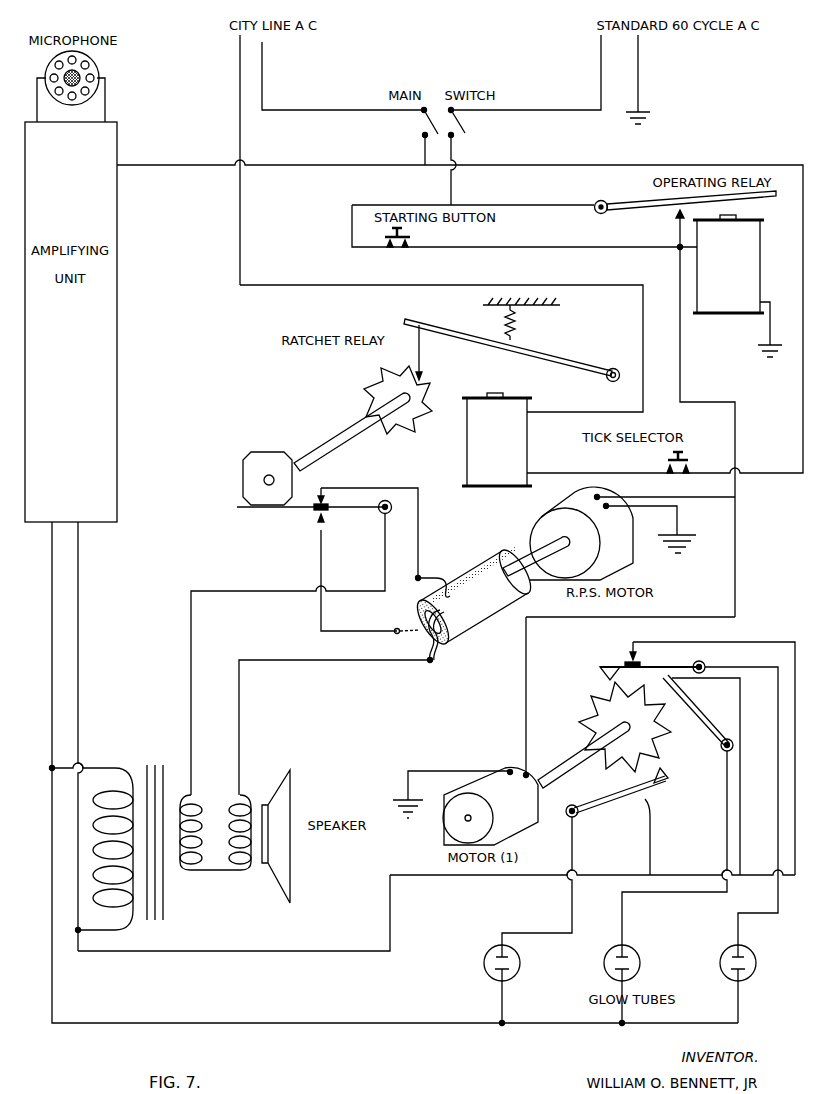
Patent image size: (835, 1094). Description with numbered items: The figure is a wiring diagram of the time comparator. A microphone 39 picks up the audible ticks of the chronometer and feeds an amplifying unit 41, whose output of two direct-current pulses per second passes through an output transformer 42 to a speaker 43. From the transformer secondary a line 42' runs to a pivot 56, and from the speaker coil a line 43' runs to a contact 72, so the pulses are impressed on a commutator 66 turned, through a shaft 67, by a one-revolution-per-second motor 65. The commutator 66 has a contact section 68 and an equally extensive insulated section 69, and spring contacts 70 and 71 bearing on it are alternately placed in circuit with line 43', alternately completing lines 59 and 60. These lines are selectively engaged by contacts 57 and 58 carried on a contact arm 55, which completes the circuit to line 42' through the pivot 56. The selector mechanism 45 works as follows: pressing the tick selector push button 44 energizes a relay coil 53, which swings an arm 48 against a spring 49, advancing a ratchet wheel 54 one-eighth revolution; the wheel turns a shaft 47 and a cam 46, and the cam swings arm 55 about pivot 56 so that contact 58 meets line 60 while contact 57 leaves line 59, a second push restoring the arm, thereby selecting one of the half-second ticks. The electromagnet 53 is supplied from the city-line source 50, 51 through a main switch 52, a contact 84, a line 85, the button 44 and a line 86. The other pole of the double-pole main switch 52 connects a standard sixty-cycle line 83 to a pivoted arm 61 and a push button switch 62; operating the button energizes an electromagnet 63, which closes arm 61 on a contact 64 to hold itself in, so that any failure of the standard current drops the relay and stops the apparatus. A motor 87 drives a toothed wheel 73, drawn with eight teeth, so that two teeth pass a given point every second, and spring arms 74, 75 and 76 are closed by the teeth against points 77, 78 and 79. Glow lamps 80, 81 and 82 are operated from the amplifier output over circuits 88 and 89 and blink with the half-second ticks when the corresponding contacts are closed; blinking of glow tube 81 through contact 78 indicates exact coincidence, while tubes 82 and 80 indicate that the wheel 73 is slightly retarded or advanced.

The microphone 39 is at (98, 70).
The amplifying unit 41 is at (114, 156).
The output transformer 42 is at (107, 736).
The line 42' is at (210, 800).
The speaker 43 is at (293, 832).
The line 43' is at (252, 800).
The tick selector push button 44 is at (684, 456).
The selector mechanism 45 is at (463, 362).
The cam 46 is at (247, 476).
The shaft 47 is at (335, 438).
The arm 48 is at (572, 361).
The spring 49 is at (522, 331).
The source of supply 50 is at (238, 70).
The source of supply 51 is at (263, 72).
The main switch 52 is at (427, 105).
The relay coil 53 is at (497, 439).
The ratchet wheel 54 is at (398, 400).
The contact arm 55 is at (246, 505).
The pivot 56 is at (392, 500).
The contact 57 is at (328, 500).
The contact 58 is at (331, 512).
The line 59 is at (420, 521).
The line 60 is at (321, 563).
The pivoted arm 61 is at (618, 203).
The push button switch 62 is at (412, 240).
The electromagnet 63 is at (737, 286).
The contact 64 is at (677, 222).
The one R.P.S. motor 65 is at (632, 533).
The commutator 66 is at (485, 555).
The motor shaft 67 is at (531, 562).
The contact section 68 is at (487, 608).
The insulated section 69 is at (468, 576).
The spring contact 70 is at (399, 600).
The spring contact 71 is at (400, 637).
The contact 72 is at (437, 650).
The toothed wheel 73 is at (598, 716).
The spring arm 74 is at (600, 672).
The spring arm 75 is at (677, 810).
The spring arm 76 is at (657, 782).
The contact point 77 is at (698, 758).
The contact point 78 is at (690, 691).
The contact point 79 is at (644, 796).
The glow lamp 80 is at (520, 958).
The glow lamp 81 is at (640, 958).
The glow lamp 82 is at (756, 958).
The standard 60 cycle AC leads 83 is at (603, 54).
The contact 84 is at (426, 165).
The line 85 is at (590, 165).
The line 86 is at (267, 284).
The motor 87 is at (455, 820).
The circuit 88 is at (196, 950).
The lead 89 is at (180, 1022).